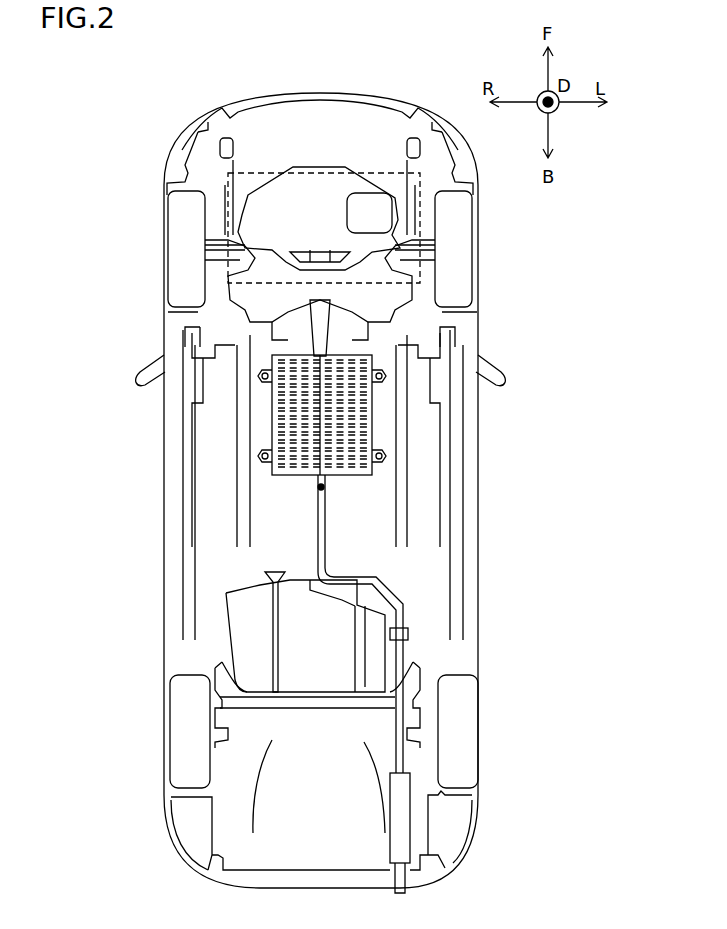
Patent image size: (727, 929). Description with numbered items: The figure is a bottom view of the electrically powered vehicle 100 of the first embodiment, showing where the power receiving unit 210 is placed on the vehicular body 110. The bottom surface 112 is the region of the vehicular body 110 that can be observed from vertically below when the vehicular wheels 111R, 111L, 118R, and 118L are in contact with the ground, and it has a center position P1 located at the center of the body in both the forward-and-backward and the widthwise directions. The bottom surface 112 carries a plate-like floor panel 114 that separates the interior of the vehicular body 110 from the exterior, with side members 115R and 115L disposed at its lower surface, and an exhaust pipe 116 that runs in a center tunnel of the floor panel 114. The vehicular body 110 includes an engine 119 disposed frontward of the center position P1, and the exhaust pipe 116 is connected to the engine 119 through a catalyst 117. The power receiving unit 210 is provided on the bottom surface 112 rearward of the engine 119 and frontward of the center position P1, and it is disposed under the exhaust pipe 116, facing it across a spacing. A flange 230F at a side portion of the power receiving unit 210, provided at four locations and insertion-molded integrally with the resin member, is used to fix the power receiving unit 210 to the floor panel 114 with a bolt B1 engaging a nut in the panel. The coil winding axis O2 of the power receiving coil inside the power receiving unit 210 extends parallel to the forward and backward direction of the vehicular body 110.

The electrically powered vehicle 100 is at (180, 82).
The vehicular body 110 is at (318, 92).
The engine 119 is at (260, 173).
The vehicular wheel 111R is at (188, 234).
The vehicular wheel 111L is at (455, 262).
The catalyst 117 is at (308, 337).
The power receiving unit 210 is at (390, 355).
The flange 230F is at (378, 437).
The bolt B1 is at (380, 456).
The coil winding axis O2 is at (372, 468).
The center position P1 is at (318, 488).
The bottom surface 112 is at (285, 523).
The floor panel 114 is at (305, 553).
The side member 115R is at (190, 603).
The side member 115L is at (462, 612).
The exhaust pipe 116 is at (310, 685).
The vehicular wheel 118R is at (200, 729).
The vehicular wheel 118L is at (455, 746).